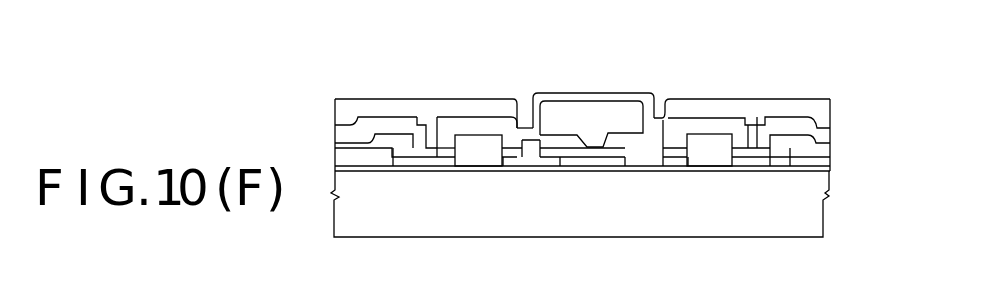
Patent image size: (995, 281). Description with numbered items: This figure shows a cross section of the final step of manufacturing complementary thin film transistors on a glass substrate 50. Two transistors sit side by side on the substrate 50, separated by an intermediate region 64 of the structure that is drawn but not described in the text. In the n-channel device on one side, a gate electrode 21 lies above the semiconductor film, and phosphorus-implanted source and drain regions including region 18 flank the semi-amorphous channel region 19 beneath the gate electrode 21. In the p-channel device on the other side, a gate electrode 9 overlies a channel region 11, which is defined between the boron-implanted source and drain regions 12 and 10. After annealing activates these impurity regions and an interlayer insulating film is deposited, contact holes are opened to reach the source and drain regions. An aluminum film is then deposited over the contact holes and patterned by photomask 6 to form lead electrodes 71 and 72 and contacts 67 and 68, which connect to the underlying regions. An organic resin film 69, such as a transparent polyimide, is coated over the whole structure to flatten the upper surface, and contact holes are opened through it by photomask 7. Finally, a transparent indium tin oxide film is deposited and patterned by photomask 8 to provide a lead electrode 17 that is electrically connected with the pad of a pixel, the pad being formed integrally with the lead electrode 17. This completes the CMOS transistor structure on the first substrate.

The lead electrode 72 is at (357, 121).
The insulating layer 64 is at (404, 163).
The photomask 6 is at (435, 110).
The channel region 19 is at (468, 162).
The gate electrode 21 is at (482, 142).
The photomask 7 is at (518, 125).
The contact 68 is at (527, 127).
The lead electrode 17 is at (597, 92).
The source or drain region 18 is at (546, 160).
The source or drain region 12 is at (637, 160).
The photomask 8 is at (656, 92).
The contact 67 is at (665, 120).
The channel region 11 is at (699, 142).
The gate electrode 9 is at (725, 148).
The source or drain region 10 is at (778, 163).
The lead electrode 71 is at (821, 116).
The organic resin film 69 is at (833, 117).
The glass substrate 50 is at (822, 221).